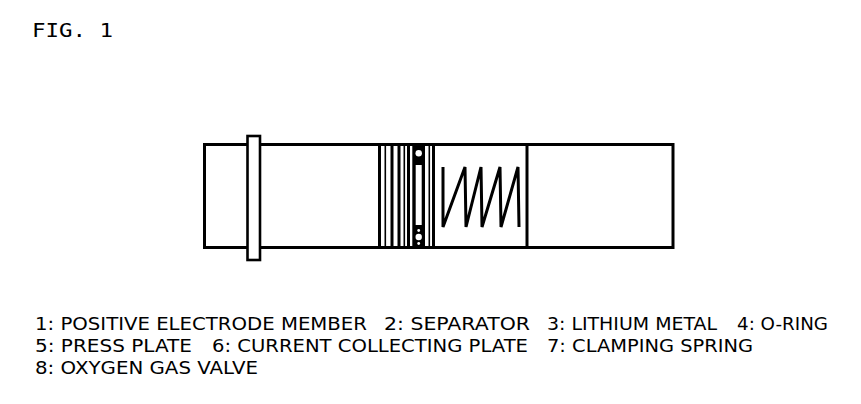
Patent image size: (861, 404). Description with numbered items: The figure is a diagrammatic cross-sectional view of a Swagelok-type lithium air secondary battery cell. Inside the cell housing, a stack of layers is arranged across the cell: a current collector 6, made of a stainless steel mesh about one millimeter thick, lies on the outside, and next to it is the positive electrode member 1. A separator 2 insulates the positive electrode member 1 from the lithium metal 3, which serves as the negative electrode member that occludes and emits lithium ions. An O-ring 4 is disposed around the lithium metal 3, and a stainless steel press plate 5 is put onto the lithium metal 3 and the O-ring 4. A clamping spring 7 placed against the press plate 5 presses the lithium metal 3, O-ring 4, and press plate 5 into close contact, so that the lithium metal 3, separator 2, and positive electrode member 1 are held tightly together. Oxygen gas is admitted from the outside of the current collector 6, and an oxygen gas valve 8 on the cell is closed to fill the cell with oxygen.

The positive electrode member 1 is at (391, 144).
The separator 2 is at (408, 144).
The lithium metal 3 is at (417, 192).
The O-ring 4 is at (417, 250).
The press plate 5 is at (428, 144).
The current collector 6 is at (383, 144).
The clamping spring 7 is at (480, 167).
The oxygen gas valve 8 is at (252, 136).